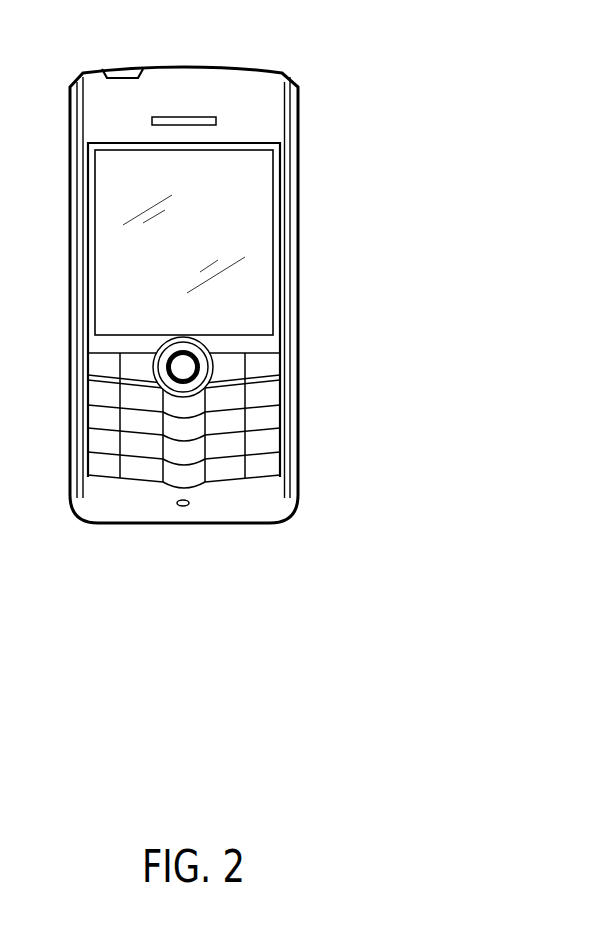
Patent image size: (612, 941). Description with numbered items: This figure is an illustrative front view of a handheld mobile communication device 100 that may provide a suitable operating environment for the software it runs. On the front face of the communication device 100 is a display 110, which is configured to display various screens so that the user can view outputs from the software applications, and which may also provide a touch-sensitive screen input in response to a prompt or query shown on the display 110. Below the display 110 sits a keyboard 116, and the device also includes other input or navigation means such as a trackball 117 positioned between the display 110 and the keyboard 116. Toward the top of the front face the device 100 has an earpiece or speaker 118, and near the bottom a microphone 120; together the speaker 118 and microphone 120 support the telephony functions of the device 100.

The handheld mobile communication device 100 is at (244, 693).
The display 110 is at (243, 217).
The keyboard 116 is at (244, 516).
The trackball 117 is at (183, 368).
The speaker 118 is at (185, 117).
The microphone 120 is at (182, 508).